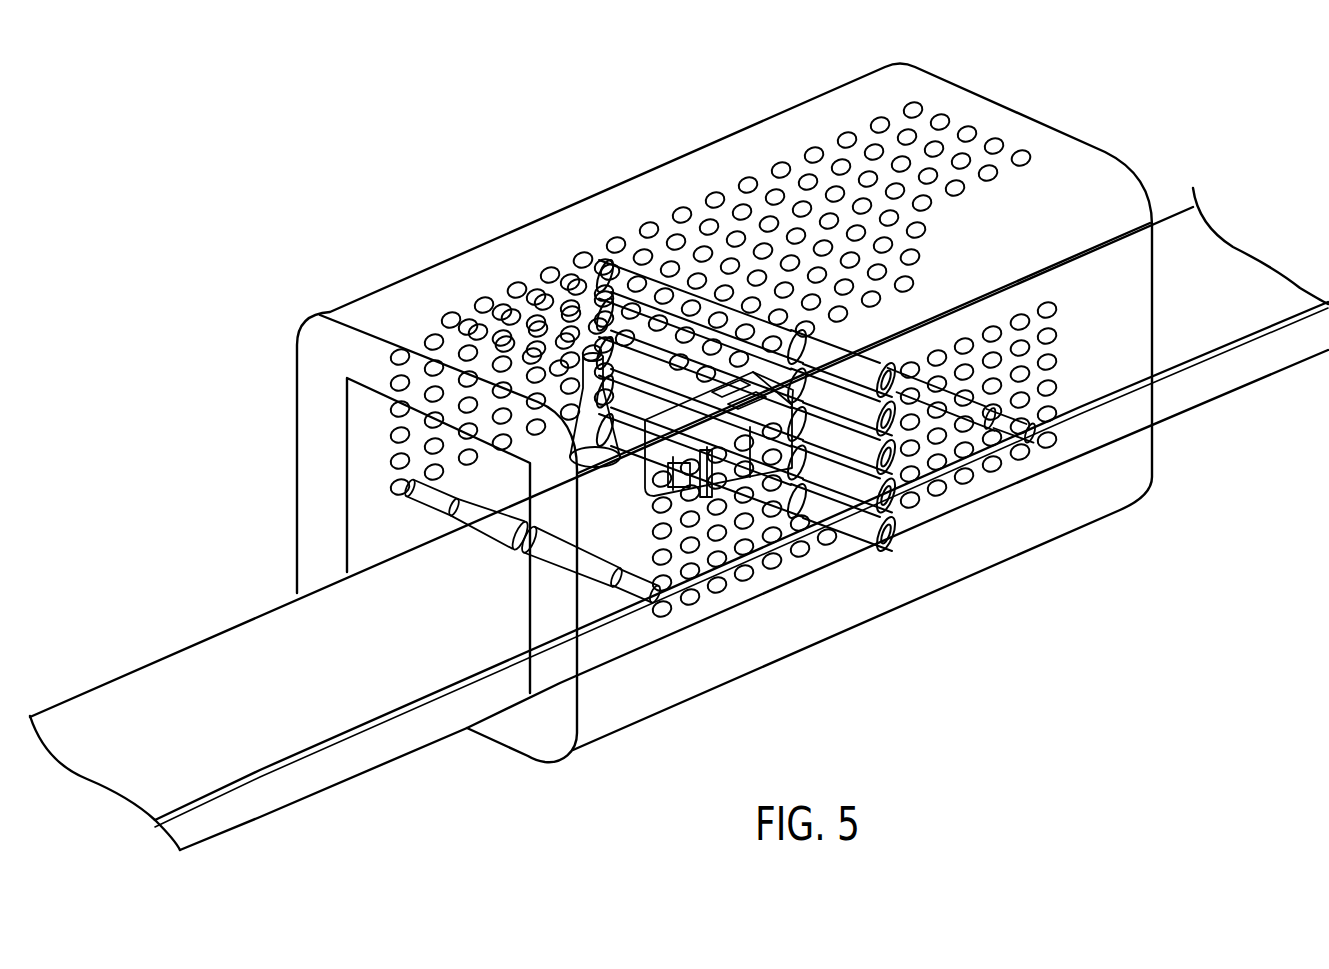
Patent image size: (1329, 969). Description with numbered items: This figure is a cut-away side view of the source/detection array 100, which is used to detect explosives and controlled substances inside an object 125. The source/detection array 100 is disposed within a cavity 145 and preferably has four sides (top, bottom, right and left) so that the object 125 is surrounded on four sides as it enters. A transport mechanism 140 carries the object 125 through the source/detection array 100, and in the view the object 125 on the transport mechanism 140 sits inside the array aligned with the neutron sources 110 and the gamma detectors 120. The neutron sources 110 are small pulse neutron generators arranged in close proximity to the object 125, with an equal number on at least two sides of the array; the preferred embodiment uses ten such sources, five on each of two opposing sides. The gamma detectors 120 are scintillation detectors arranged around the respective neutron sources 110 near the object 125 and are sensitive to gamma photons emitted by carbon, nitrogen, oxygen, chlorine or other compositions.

The source/detection array 100 is at (325, 322).
The neutron sources 110 is at (895, 540).
The gamma detectors 120 is at (423, 500).
The object 125 is at (650, 490).
The transport mechanism 140 is at (200, 650).
The cavity 145 is at (463, 557).